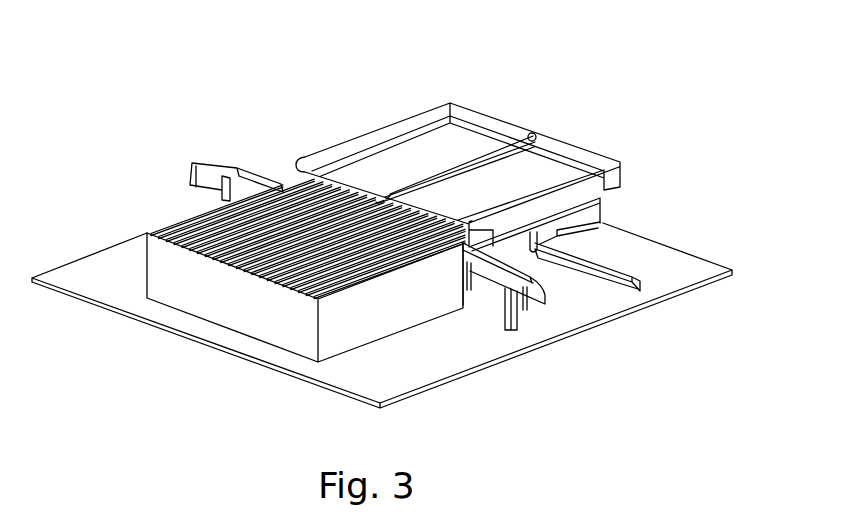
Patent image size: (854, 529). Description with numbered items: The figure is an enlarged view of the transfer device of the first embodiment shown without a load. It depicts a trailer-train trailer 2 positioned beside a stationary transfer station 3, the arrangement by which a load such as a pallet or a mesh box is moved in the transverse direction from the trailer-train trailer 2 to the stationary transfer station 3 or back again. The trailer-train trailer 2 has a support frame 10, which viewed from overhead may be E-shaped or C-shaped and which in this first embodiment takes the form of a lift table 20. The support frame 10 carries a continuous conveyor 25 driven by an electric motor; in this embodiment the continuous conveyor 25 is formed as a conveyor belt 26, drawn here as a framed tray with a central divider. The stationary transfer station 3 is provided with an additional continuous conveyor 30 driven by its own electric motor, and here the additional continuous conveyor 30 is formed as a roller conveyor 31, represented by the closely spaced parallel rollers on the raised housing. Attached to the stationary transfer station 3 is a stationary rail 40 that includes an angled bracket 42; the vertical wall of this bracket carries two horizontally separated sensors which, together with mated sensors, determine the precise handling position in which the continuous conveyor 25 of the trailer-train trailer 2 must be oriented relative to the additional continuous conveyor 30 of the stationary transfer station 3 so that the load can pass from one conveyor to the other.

The trailer-train trailer 2 is at (463, 139).
The stationary transfer station 3 is at (270, 168).
The support frame 10 is at (590, 188).
The lift table 20 is at (572, 305).
The continuous conveyor 25 is at (462, 152).
The conveyor belt 26 is at (388, 197).
The additional continuous conveyor 30 is at (293, 302).
The roller conveyor 31 is at (264, 272).
The stationary rail 40 is at (533, 343).
The angled bracket 42 is at (519, 296).